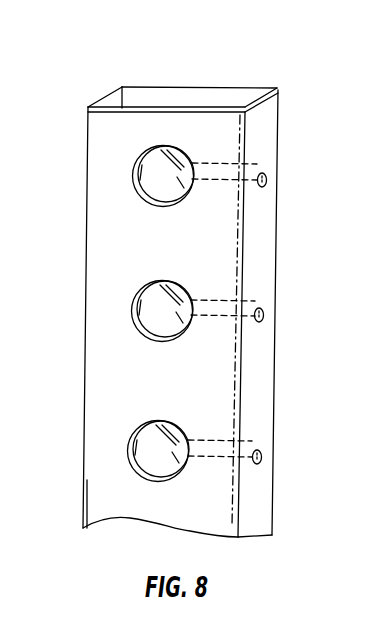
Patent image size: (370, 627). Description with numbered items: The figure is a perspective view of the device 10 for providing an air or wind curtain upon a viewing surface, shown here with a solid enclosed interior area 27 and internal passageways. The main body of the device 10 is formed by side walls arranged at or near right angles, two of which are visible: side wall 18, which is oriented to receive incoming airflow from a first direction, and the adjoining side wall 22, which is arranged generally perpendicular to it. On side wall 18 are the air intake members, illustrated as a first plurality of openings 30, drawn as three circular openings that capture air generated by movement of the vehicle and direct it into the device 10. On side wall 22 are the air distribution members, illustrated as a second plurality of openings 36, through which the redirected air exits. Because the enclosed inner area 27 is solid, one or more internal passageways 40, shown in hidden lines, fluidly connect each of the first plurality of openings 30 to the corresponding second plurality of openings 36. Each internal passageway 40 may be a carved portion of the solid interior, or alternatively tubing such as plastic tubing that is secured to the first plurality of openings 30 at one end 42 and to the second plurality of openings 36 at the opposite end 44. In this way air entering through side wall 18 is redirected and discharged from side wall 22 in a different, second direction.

The device 10 is at (186, 281).
The side wall 18 is at (138, 385).
The side wall 22 is at (252, 502).
The enclosed inner area 27 is at (189, 104).
The first plurality of openings 30 is at (160, 207).
The second plurality of openings 36 is at (268, 183).
The internal passageway 40 is at (210, 317).
The end of internal passageway 42 is at (193, 292).
The opposite end of internal passageway 44 is at (248, 303).